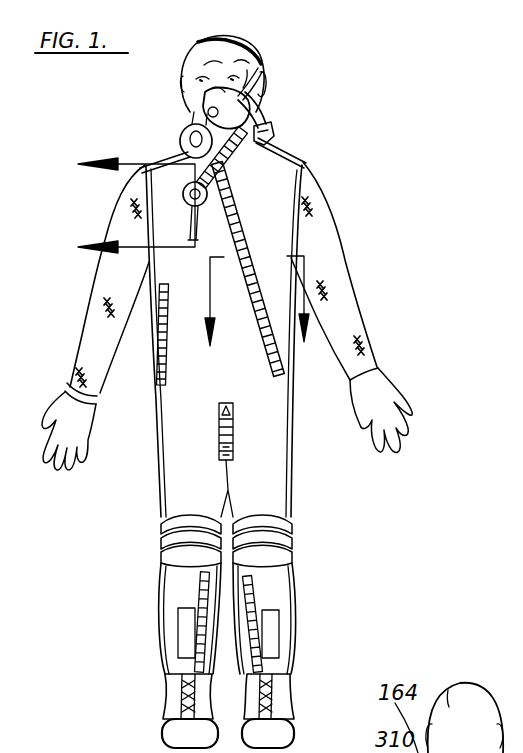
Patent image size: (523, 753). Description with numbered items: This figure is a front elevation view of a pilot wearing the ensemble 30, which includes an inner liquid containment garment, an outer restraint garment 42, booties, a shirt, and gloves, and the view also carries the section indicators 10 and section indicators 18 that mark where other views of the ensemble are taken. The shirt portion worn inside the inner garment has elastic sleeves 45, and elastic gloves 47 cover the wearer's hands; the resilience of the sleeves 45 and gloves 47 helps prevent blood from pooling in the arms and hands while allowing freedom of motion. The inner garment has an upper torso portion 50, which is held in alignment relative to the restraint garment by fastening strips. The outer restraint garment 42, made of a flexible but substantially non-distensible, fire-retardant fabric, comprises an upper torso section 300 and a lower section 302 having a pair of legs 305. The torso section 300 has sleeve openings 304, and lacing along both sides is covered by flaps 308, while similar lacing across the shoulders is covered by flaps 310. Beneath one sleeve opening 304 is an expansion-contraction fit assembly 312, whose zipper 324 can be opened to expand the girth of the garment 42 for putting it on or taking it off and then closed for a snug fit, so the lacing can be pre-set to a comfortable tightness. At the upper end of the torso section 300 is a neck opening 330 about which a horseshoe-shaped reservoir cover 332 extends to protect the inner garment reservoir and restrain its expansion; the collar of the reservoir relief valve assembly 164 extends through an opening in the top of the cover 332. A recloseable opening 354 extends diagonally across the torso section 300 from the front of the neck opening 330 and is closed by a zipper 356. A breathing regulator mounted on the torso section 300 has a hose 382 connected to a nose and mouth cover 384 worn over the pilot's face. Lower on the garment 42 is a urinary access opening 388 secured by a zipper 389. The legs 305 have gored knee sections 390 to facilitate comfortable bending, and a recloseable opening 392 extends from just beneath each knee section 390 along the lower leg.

The section line 10 is at (121, 203).
The section line 18 is at (265, 315).
The ensemble 30 is at (318, 472).
The outer restraint garment 42 is at (275, 188).
The elastic sleeves 45 is at (83, 360).
The elastic gloves 47 is at (84, 438).
The torso portion 50 is at (305, 282).
The reservoir relief valve assembly 164 is at (272, 102).
The upper torso section 300 is at (149, 287).
The lower section 302 is at (155, 478).
The sleeve openings 304 is at (138, 203).
The legs 305 is at (162, 520).
The flaps 308 is at (150, 403).
The flaps 310 is at (167, 150).
The expansion-contraction fit assembly 312 is at (150, 350).
The zipper 324 is at (160, 333).
The neck opening 330 is at (184, 128).
The reservoir cover 332 is at (273, 141).
The recloseable opening 354 is at (250, 258).
The zipper 356 is at (243, 240).
The hose 382 is at (258, 113).
The nose and mouth cover 384 is at (250, 68).
The urinary access opening 388 is at (233, 431).
The zipper 389 is at (219, 444).
The gored knee sections 390 is at (163, 550).
The recloseable opening 392 is at (252, 604).